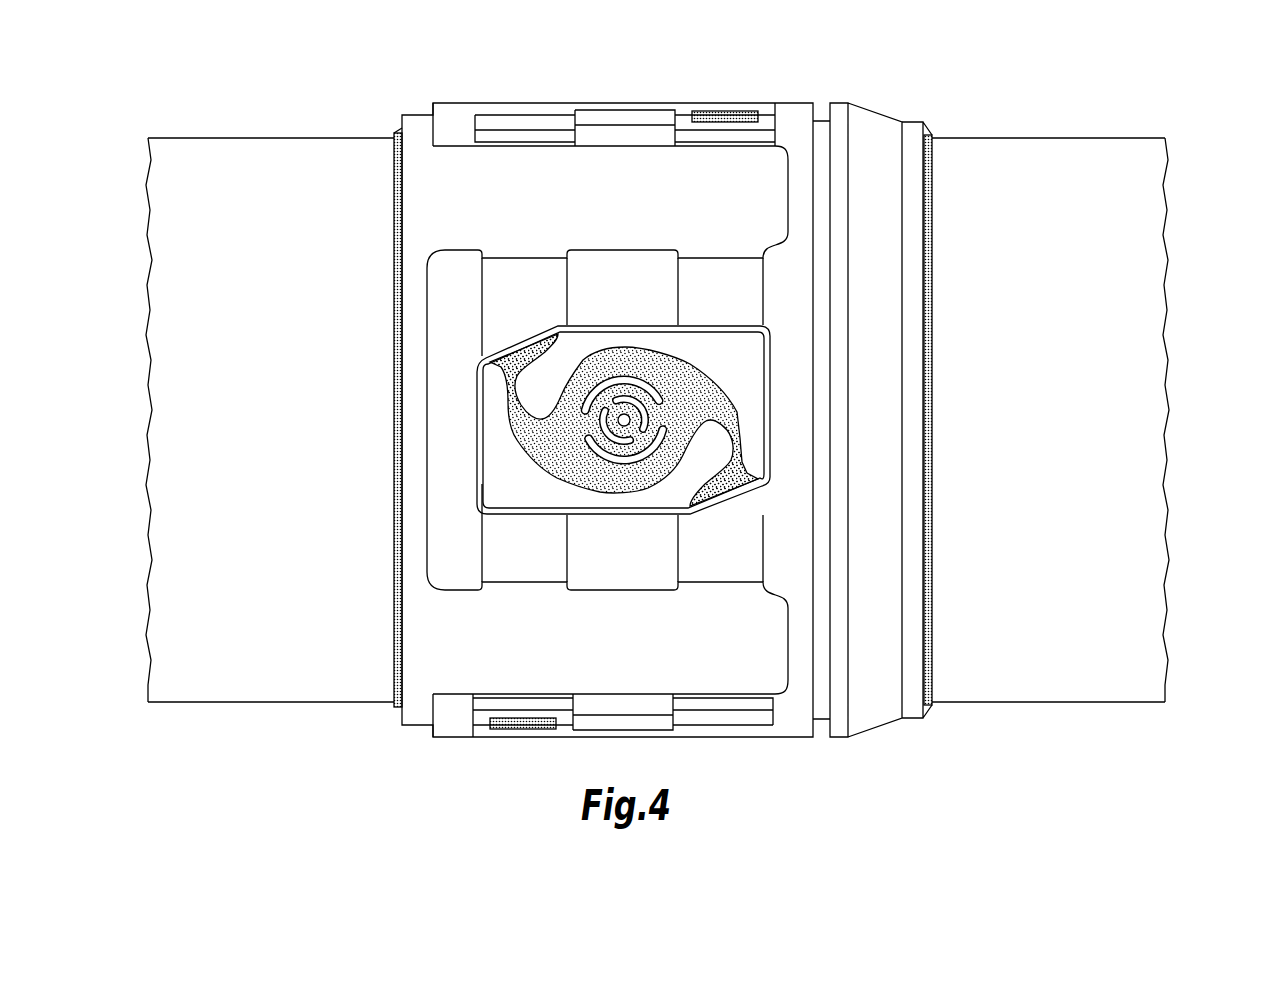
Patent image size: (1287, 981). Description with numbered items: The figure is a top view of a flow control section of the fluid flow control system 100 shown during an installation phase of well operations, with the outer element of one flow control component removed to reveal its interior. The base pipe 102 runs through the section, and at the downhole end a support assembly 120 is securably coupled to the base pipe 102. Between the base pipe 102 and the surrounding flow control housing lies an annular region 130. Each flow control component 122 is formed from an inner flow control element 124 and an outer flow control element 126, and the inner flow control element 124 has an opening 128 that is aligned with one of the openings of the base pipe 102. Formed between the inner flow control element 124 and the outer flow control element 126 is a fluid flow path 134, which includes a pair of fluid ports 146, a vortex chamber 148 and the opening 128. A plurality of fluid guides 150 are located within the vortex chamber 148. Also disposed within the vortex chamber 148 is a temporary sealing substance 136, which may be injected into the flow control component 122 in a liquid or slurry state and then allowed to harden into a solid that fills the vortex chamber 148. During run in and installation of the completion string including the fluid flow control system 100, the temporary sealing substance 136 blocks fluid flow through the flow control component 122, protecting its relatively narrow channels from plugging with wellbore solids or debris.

The fluid flow control system 100 is at (1200, 100).
The base pipe 102 is at (258, 137).
The support assembly 120 is at (875, 113).
The flow control component 122 is at (645, 103).
The inner flow control element 124 is at (550, 105).
The outer flow control element 126 is at (505, 105).
The opening 128 is at (627, 412).
The annular region 130 is at (219, 368).
The fluid flow path 134 is at (543, 442).
The temporary sealing substance 136 is at (718, 107).
The fluid ports 146 is at (753, 107).
The vortex chamber 148 is at (570, 441).
The fluid guides 150 is at (607, 461).